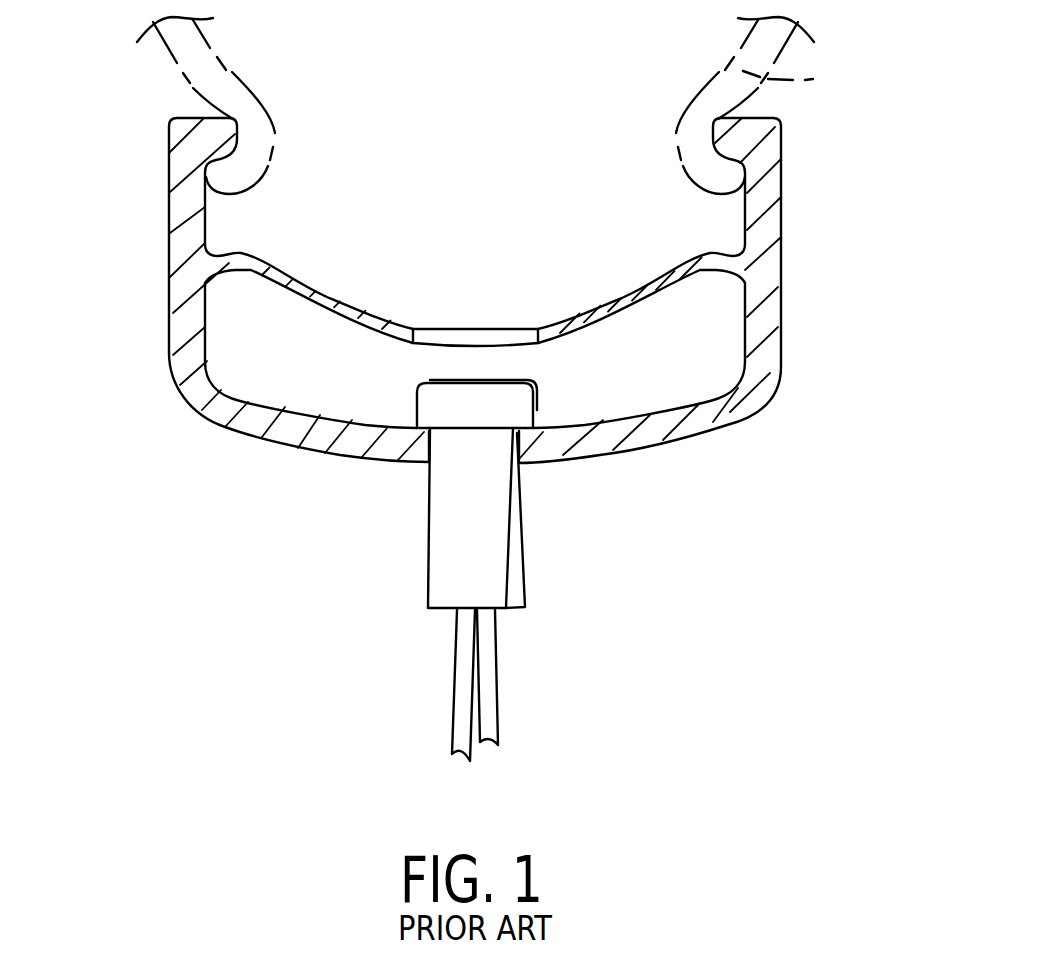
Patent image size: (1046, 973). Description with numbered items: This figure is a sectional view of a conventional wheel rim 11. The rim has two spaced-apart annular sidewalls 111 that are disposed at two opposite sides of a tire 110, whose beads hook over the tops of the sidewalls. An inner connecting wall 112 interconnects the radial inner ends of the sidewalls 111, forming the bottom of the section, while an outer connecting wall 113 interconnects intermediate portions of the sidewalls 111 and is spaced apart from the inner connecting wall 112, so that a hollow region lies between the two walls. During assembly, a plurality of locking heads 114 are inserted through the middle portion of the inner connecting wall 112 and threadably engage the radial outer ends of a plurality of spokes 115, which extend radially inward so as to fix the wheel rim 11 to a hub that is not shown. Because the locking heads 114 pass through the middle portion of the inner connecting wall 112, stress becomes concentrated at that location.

The wheel rim 11 is at (497, 335).
The tire 110 is at (823, 77).
The annular sidewalls 111 is at (168, 203).
The inner connecting wall 112 is at (293, 443).
The outer connecting wall 113 is at (328, 297).
The locking heads 114 is at (428, 560).
The spokes 115 is at (453, 710).